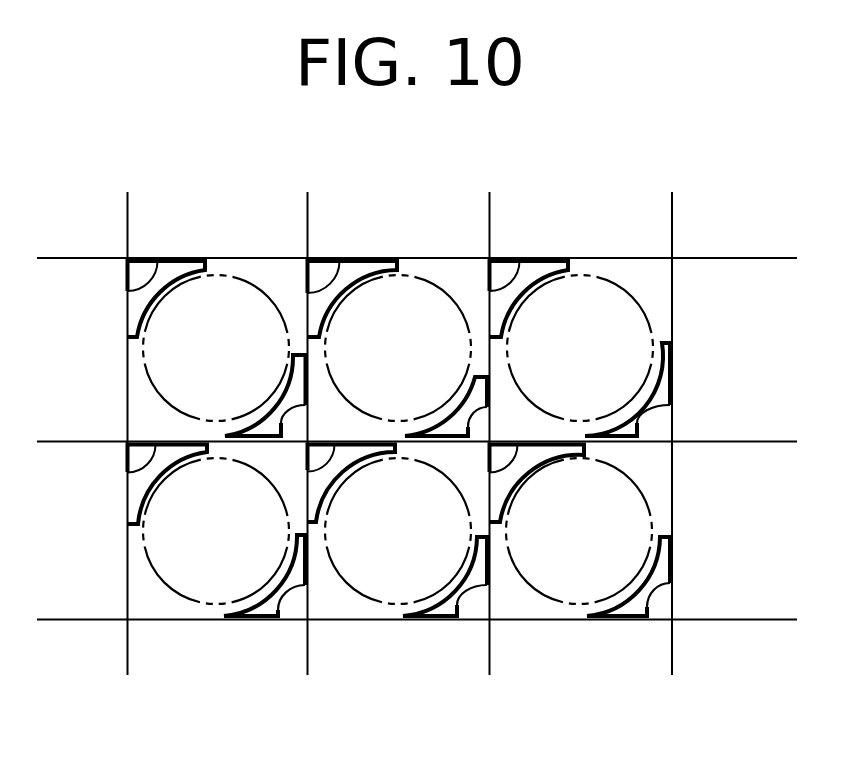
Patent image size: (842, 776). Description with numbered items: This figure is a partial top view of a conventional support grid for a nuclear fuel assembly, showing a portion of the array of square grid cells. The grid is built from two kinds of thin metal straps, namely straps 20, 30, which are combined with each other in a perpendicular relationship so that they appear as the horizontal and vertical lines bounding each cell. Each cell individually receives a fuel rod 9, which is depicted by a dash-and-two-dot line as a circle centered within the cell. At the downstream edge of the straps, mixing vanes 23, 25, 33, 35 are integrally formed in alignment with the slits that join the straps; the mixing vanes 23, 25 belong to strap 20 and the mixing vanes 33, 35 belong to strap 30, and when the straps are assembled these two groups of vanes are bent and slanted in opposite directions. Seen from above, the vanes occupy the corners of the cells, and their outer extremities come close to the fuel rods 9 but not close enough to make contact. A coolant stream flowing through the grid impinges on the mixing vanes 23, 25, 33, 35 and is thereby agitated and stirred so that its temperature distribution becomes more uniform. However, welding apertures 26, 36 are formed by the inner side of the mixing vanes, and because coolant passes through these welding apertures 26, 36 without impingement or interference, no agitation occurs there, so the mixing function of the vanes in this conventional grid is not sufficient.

The fuel rod 9 is at (153, 388).
The strap 20 is at (65, 260).
The strap 30 is at (128, 647).
The mixing vane 23 is at (345, 280).
The mixing vane 25 is at (455, 427).
The welding aperture 26 is at (323, 275).
The mixing vane 33 is at (655, 390).
The mixing vane 35 is at (330, 474).
The welding aperture 36 is at (318, 460).